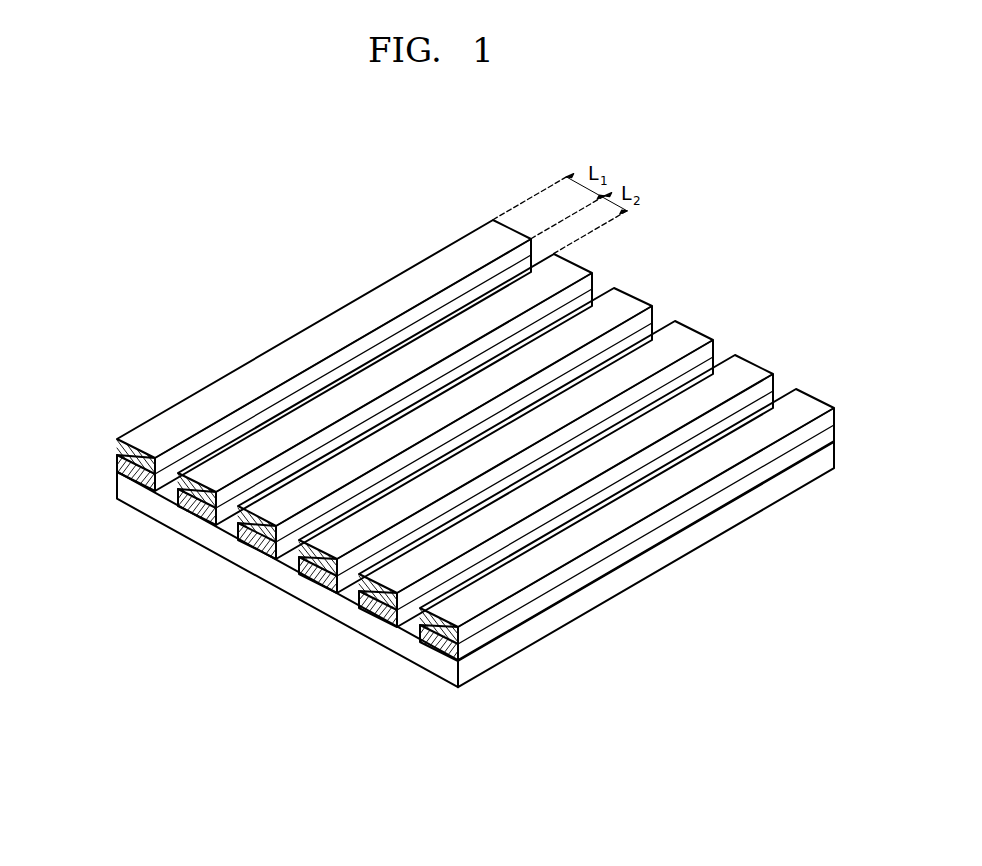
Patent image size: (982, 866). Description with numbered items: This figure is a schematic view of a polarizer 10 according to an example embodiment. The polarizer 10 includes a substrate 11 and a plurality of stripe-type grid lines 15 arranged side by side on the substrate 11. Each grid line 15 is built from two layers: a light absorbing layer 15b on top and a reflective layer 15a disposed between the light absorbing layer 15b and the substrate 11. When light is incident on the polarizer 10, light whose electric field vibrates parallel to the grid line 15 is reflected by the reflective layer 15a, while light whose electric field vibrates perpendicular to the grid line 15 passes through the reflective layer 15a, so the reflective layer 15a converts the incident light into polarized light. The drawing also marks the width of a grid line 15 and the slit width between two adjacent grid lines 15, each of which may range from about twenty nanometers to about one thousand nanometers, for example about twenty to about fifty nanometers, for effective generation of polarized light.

The polarizer 10 is at (266, 239).
The substrate 11 is at (285, 578).
The grid line 15 is at (250, 362).
The reflective layer 15a is at (117, 457).
The light absorbing layer 15b is at (117, 443).